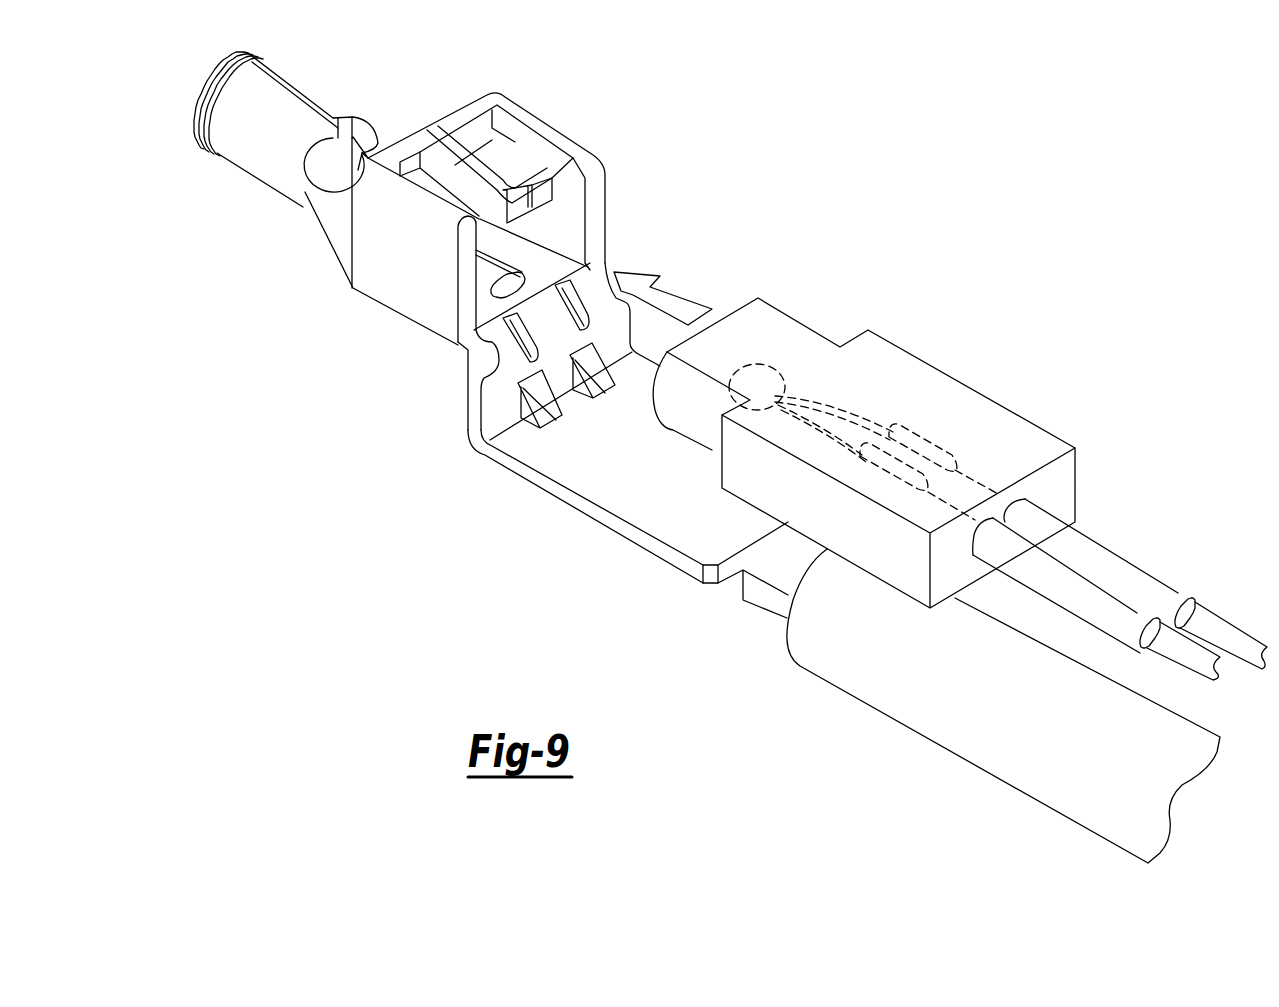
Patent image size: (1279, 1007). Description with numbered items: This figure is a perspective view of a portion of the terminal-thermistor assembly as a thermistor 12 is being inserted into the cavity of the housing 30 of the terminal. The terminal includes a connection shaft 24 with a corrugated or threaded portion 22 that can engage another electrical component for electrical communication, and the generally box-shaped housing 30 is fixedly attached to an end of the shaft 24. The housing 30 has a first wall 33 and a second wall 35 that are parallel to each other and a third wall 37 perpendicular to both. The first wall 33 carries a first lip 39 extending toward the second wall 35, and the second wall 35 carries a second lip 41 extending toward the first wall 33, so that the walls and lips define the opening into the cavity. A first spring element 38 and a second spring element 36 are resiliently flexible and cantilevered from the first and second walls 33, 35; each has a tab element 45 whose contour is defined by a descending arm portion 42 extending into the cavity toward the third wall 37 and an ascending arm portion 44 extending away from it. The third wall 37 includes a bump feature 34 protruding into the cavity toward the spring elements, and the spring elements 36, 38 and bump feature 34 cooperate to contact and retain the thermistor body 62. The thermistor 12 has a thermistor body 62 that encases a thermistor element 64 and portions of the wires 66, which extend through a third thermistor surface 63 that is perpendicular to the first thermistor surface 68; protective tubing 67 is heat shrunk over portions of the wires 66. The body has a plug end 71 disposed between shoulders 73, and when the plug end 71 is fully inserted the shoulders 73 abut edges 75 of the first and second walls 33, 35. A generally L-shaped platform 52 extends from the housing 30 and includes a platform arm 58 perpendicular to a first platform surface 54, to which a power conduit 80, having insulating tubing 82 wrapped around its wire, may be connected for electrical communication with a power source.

The thermistor 12 is at (940, 545).
The threaded portion 22 is at (268, 58).
The connection shaft 24 is at (208, 80).
The housing 30 is at (493, 238).
The first wall 33 is at (370, 271).
The bump feature 34 is at (518, 264).
The second wall 35 is at (560, 190).
The second spring element 36 is at (452, 112).
The third wall 37 is at (482, 310).
The first spring element 38 is at (407, 141).
The first lip 39 is at (470, 228).
The second lip 41 is at (483, 152).
The descending arm portion 42 is at (500, 178).
The ascending arm portion 44 is at (510, 188).
The tab element 45 is at (500, 153).
The platform 52 is at (583, 474).
The first platform surface 54 is at (703, 543).
The platform arm 58 is at (467, 418).
The thermistor body 62 is at (876, 418).
The third thermistor surface 63 is at (1067, 482).
The thermistor element 64 is at (760, 375).
The wires 66 is at (1220, 672).
The protective tubing 67 is at (1170, 588).
The first thermistor surface 68 is at (918, 377).
The plug end 71 is at (740, 303).
The shoulders 73 is at (848, 330).
The edges 75 is at (463, 327).
The power conduit 80 is at (1002, 706).
The insulating tubing 82 is at (970, 742).